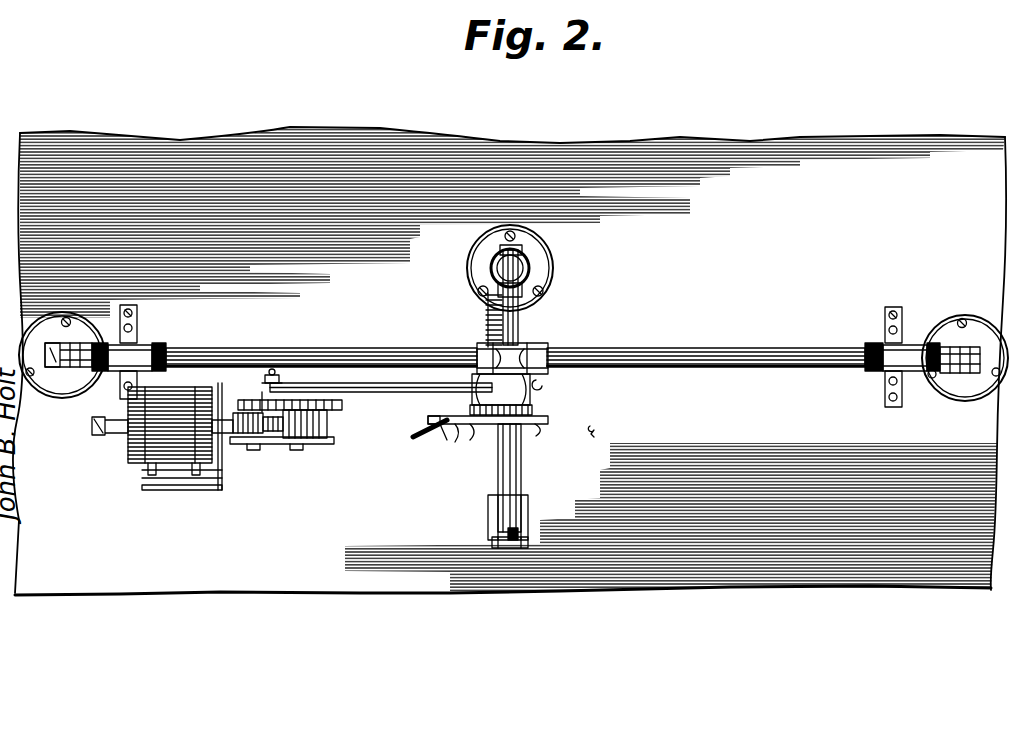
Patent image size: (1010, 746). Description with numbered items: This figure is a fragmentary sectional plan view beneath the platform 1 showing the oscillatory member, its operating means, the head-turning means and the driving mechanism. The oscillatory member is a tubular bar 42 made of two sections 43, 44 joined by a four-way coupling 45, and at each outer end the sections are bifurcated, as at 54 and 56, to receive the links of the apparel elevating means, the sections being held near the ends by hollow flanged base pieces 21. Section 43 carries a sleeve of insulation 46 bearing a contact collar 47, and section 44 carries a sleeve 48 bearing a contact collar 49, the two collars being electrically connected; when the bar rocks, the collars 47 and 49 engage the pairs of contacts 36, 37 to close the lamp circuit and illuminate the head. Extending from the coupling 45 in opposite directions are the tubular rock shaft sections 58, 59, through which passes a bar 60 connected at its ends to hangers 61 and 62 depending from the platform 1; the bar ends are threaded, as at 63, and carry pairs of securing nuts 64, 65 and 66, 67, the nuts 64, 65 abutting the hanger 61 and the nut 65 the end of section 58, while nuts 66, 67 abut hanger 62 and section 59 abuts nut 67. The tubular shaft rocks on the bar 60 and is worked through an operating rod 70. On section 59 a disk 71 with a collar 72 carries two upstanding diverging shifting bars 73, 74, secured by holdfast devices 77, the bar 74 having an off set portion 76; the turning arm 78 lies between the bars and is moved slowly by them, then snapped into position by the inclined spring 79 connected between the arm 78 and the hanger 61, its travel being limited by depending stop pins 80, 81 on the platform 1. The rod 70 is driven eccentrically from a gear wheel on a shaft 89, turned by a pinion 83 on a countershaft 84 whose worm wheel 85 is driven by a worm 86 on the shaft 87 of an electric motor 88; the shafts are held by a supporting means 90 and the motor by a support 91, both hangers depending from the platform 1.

The platform 1 is at (724, 184).
The hollow flanged base piece 21 is at (74, 386).
The pair of contacts 36 is at (136, 340).
The pair of contacts 37 is at (902, 331).
The tubular bar 42 is at (673, 376).
The section 43 is at (386, 350).
The section 44 is at (740, 350).
The four-way coupling 45 is at (540, 346).
The sleeve of insulation 46 is at (156, 368).
The contact collar 47 is at (158, 352).
The sleeve of insulation 48 is at (878, 372).
The contact collar 49 is at (892, 358).
The bifurcated outer end 54 is at (66, 348).
The bifurcated outer end 56 is at (968, 346).
The rock shaft section 58 is at (522, 332).
The rock shaft section 59 is at (519, 472).
The bar 60 is at (497, 470).
The hanger 61 is at (553, 237).
The hanger 62 is at (492, 526).
The threaded terminal portion 63 is at (500, 277).
The securing nut 64 is at (536, 265).
The securing nut 65 is at (530, 273).
The securing nut 66 is at (529, 547).
The securing nut 67 is at (518, 536).
The operating rod 70 is at (393, 386).
The disk 71 is at (472, 404).
The collar 72 is at (540, 410).
The shifting bar 73 is at (548, 419).
The shifting bar 74 is at (468, 448).
The off set portion 76 is at (433, 436).
The holdfast devices 77 is at (480, 430).
The turning arm 78 is at (466, 426).
The spring 79 is at (488, 329).
The depending pin 80 is at (428, 419).
The depending pin 81 is at (597, 439).
The pinion 83 is at (254, 413).
The countershaft 84 is at (272, 433).
The worm wheel 85 is at (262, 445).
The worm 86 is at (243, 441).
The motor shaft 87 is at (233, 417).
The electric motor 88 is at (142, 466).
The shaft 89 is at (306, 424).
The supporting means 90 is at (318, 445).
The support 91 is at (200, 492).